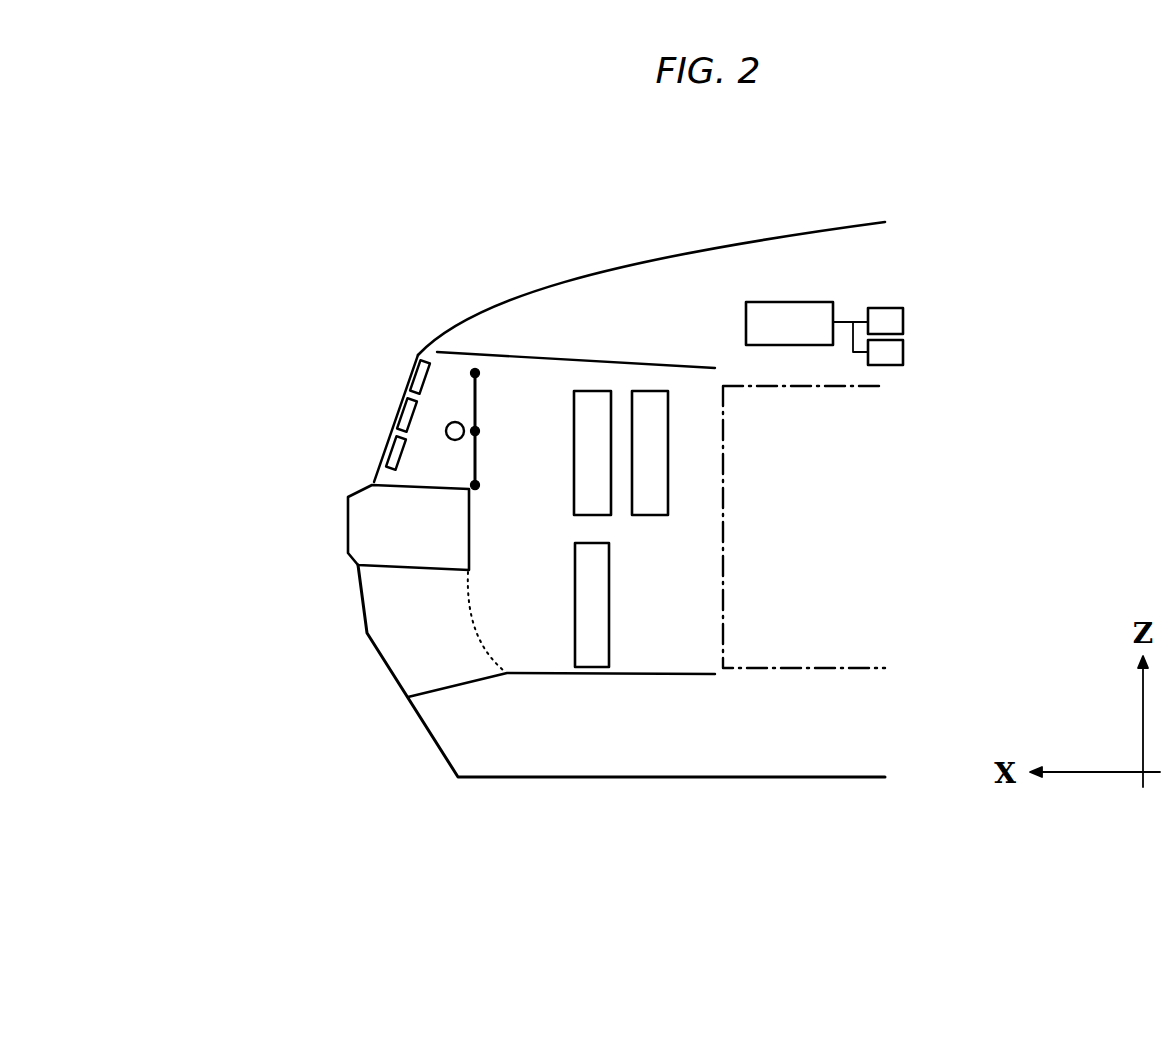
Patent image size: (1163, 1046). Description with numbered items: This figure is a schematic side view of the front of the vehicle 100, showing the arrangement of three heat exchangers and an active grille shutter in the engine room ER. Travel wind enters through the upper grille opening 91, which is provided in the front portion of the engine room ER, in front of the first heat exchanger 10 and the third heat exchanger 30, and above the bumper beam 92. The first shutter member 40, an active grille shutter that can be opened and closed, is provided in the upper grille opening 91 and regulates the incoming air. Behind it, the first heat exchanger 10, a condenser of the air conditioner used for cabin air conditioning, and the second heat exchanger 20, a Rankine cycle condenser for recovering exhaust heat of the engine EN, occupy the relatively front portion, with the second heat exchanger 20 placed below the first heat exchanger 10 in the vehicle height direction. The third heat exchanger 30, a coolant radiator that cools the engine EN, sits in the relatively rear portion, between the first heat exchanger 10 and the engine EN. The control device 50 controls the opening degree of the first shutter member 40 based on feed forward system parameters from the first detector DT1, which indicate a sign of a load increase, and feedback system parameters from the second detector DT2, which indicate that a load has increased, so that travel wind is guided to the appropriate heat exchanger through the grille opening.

The vehicle 100 is at (176, 163).
The first heat exchanger 10 is at (593, 400).
The second heat exchanger 20 is at (592, 658).
The third heat exchanger 30 is at (648, 392).
The first shutter member 40 is at (460, 382).
The control device 50 is at (812, 302).
The upper grille opening 91 is at (400, 418).
The bumper beam 92 is at (357, 553).
The first detector DT1 is at (903, 313).
The second detector DT2 is at (903, 360).
The engine EN is at (827, 523).
The engine room ER is at (680, 657).